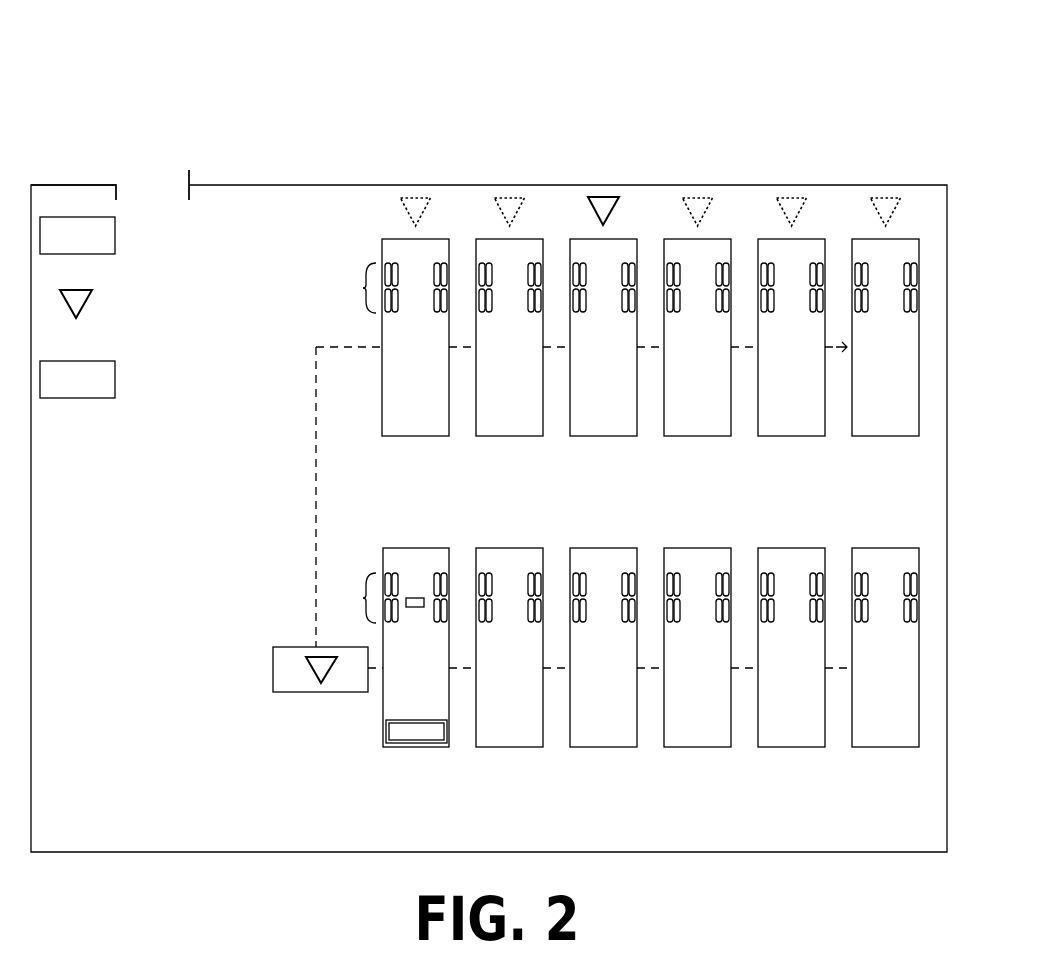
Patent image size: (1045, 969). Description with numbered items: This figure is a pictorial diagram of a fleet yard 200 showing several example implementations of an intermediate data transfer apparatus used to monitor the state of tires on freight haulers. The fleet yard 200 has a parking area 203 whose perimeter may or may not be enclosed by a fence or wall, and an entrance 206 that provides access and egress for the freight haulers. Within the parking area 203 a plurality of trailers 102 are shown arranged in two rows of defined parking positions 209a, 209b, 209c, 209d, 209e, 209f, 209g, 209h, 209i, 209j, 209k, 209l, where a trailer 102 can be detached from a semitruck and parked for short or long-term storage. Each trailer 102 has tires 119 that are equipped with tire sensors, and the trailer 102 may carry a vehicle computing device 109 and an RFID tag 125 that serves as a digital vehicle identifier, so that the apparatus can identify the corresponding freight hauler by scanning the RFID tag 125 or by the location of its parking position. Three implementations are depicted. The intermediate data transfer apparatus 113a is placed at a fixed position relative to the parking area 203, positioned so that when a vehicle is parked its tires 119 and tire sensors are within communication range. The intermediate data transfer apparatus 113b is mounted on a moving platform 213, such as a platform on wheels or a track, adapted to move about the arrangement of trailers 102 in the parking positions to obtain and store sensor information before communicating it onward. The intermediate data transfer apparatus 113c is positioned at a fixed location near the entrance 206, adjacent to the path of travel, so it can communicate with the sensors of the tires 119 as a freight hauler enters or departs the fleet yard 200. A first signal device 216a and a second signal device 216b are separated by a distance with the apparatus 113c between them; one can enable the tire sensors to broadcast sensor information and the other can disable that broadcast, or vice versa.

The fleet yard 200 is at (192, 42).
The parking area 203 is at (230, 480).
The entrance 206 is at (116, 172).
The first signal device 216a is at (50, 248).
The second signal device 216b is at (50, 392).
The intermediate data transfer apparatus 113a is at (603, 197).
The intermediate data transfer apparatus 113b is at (321, 684).
The intermediate data transfer apparatus 113c is at (76, 318).
The trailer 102 is at (650, 493).
The tires 119 is at (362, 288).
The vehicle computing device 109 is at (415, 597).
The moving platform 213 is at (273, 668).
The RFID tag 125 is at (391, 746).
The parking position 209a is at (423, 448).
The parking position 209b is at (517, 448).
The parking position 209c is at (611, 448).
The parking position 209d is at (705, 448).
The parking position 209e is at (799, 448).
The parking position 209f is at (893, 448).
The parking position 209g is at (421, 770).
The parking position 209h is at (515, 770).
The parking position 209i is at (609, 770).
The parking position 209j is at (703, 770).
The parking position 209k is at (797, 770).
The parking position 209l is at (891, 770).